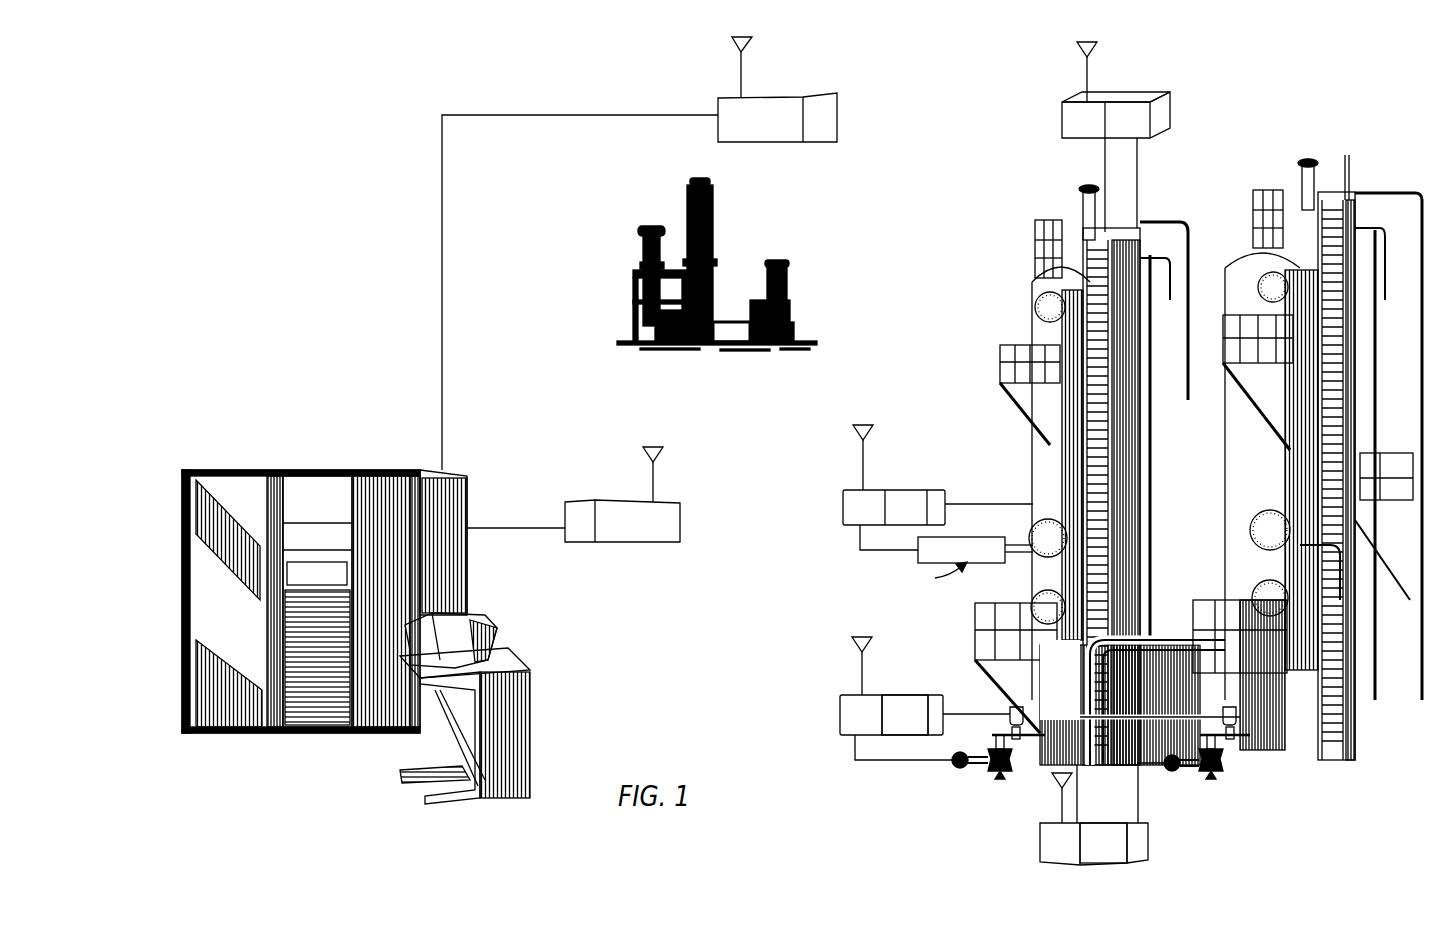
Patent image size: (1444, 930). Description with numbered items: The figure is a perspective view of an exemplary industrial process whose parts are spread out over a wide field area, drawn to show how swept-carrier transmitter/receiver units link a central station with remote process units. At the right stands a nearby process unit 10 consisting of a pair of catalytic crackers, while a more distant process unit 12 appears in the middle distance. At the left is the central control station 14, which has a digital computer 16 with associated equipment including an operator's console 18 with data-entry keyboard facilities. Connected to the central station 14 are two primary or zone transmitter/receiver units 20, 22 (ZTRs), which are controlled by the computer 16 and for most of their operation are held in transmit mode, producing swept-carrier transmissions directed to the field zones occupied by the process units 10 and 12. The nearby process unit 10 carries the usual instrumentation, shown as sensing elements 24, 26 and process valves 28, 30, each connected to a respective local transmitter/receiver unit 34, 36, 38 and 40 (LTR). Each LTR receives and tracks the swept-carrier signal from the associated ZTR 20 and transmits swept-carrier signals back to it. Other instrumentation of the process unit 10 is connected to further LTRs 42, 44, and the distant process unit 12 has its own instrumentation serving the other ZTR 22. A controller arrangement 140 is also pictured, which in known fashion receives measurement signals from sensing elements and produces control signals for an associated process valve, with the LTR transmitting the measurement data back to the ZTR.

The nearby process unit 10 is at (1332, 150).
The distant process unit 12 is at (720, 248).
The central control station 14 is at (292, 435).
The digital computer 16 is at (310, 497).
The operator's console 18 is at (508, 652).
The zone transmitter/receiver unit 20 is at (658, 542).
The zone transmitter/receiver unit 22 is at (833, 95).
The sensing element 24 is at (1010, 708).
The sensing element 26 is at (1228, 743).
The process valve 28 is at (995, 777).
The process valve 30 is at (1207, 770).
The local transmitter/receiver unit 34 is at (915, 735).
The local transmitter/receiver unit 36 is at (1040, 842).
The local transmitter/receiver unit 38 is at (840, 716).
The local transmitter/receiver unit 40 is at (1148, 845).
The local transmitter/receiver unit 42 is at (850, 483).
The local transmitter/receiver unit 44 is at (1074, 97).
The controller arrangement 140 is at (983, 563).